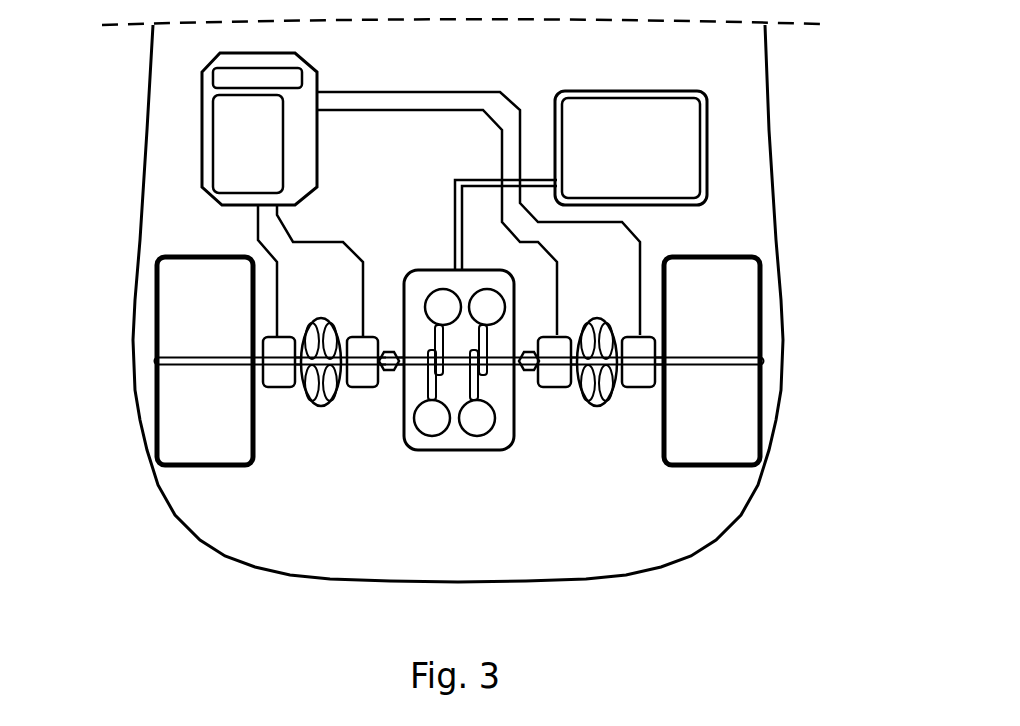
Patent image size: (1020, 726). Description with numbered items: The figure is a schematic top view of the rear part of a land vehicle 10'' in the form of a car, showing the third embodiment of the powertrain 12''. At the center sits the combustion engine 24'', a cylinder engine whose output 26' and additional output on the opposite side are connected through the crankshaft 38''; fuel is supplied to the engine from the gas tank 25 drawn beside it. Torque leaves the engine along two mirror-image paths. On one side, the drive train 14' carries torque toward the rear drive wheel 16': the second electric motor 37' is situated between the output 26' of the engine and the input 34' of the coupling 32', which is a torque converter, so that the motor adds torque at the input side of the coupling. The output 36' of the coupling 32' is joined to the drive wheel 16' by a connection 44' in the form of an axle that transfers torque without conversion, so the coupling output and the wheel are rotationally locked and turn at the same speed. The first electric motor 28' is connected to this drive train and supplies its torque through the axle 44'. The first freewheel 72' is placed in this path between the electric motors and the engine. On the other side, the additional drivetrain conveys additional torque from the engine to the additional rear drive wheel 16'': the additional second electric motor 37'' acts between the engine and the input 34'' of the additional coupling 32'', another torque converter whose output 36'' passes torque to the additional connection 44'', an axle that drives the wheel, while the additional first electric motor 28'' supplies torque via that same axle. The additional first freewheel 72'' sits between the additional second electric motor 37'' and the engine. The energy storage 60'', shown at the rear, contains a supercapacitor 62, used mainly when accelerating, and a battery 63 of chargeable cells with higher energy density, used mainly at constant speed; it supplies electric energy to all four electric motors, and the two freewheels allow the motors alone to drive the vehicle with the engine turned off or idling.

The land vehicle 10'' is at (511, 303).
The powertrain 12'' is at (490, 462).
The drive train 14' is at (462, 492).
The rear drive wheel 16' is at (151, 361).
The additional rear drive wheel 16'' is at (774, 361).
The combustion engine 24'' is at (459, 323).
The gas tank 25 is at (707, 108).
The output of the combustion engine 26' is at (392, 280).
The first electric motor 28' is at (261, 430).
The additional first electric motor 28'' is at (673, 441).
The coupling 32' is at (320, 421).
The additional coupling 32'' is at (599, 421).
The input of the coupling 34' is at (358, 430).
The input of the additional coupling 34'' is at (569, 441).
The output of the coupling 36' is at (283, 441).
The output of the additional coupling 36'' is at (640, 430).
The second electric motor 37' is at (389, 441).
The additional second electric motor 37'' is at (544, 430).
The crankshaft 38'' is at (459, 452).
The connection 44' is at (279, 441).
The additional connection 44'' is at (639, 441).
The energy storage 60'' is at (182, 129).
The supercapacitor 62 is at (210, 157).
The battery 63 is at (215, 80).
The first freewheel 72' is at (409, 438).
The additional first freewheel 72'' is at (508, 438).